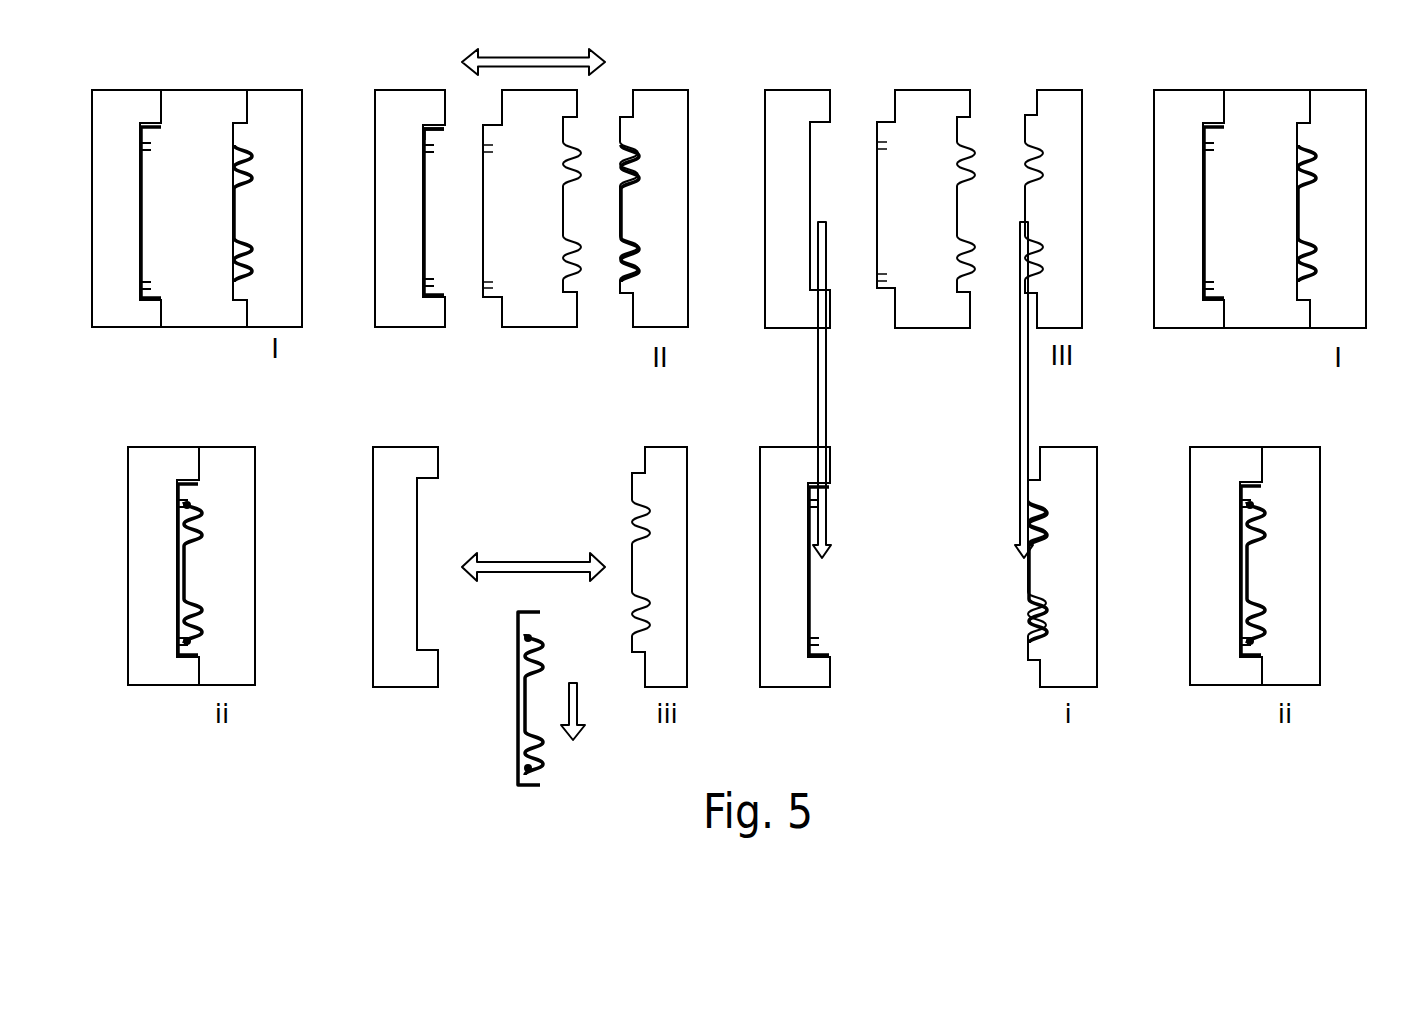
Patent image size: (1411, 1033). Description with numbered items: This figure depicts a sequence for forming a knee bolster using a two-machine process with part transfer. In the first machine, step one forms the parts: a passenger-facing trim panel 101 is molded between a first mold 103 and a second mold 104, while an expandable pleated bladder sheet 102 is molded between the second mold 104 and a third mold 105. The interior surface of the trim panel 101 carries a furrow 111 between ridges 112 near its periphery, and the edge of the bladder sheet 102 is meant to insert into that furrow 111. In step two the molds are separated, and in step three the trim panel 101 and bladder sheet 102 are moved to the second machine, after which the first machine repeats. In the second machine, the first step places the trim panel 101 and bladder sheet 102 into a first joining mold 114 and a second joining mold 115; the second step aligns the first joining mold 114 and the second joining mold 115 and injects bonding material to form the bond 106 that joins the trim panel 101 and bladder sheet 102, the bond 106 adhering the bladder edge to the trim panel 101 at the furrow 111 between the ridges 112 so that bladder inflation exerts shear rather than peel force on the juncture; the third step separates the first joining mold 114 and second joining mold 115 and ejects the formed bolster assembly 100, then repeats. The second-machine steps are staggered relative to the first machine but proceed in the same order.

The bolster assembly 100 is at (500, 765).
The trim panel 101 is at (143, 253).
The bladder sheet 102 is at (238, 215).
The first mold 103 is at (660, 209).
The second mold 104 is at (741, 209).
The third mold 105 is at (810, 209).
The bond 106 is at (188, 502).
The furrow 111 is at (428, 150).
The ridges 112 is at (432, 147).
The first joining mold 114 is at (155, 668).
The second joining mold 115 is at (229, 655).